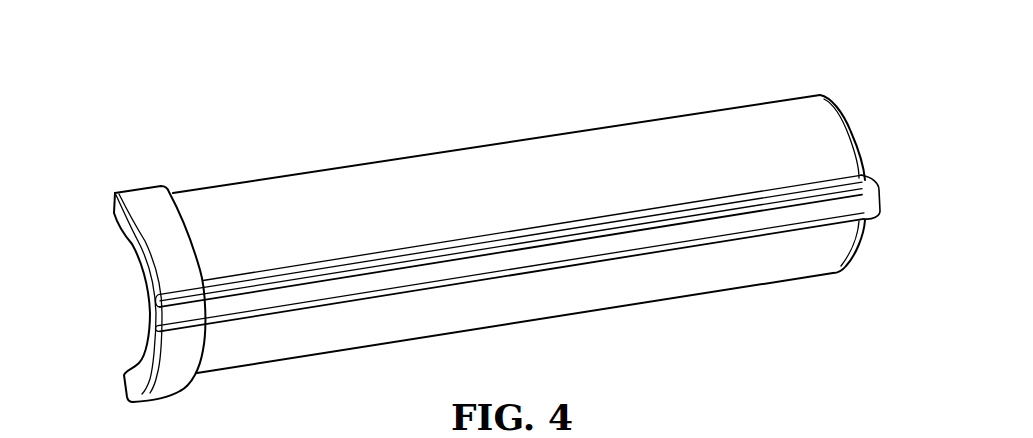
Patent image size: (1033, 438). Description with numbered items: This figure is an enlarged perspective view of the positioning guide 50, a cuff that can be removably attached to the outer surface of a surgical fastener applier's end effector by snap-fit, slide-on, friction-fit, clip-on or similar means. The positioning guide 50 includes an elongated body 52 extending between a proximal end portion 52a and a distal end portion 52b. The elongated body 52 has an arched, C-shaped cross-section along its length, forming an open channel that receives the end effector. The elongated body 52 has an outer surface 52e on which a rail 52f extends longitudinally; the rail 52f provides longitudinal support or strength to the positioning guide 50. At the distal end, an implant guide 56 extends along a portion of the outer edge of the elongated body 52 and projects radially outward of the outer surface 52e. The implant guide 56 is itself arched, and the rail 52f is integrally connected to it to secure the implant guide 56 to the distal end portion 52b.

The positioning guide 50 is at (455, 150).
The elongated body 52 is at (620, 308).
The proximal end portion 52a is at (772, 102).
The distal end portion 52b is at (137, 249).
The outer surface 52e is at (618, 126).
The rail 52f is at (175, 312).
The implant guide 56 is at (145, 348).